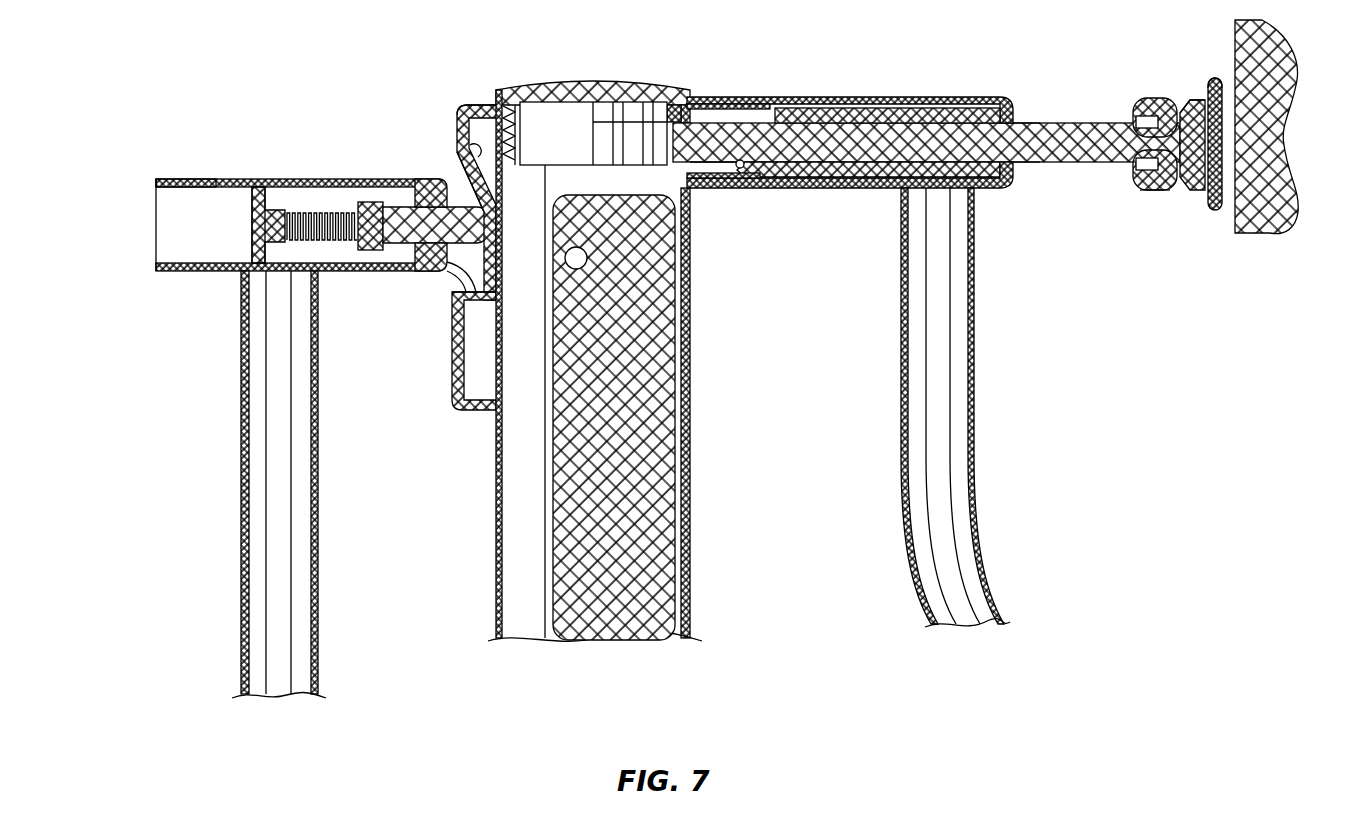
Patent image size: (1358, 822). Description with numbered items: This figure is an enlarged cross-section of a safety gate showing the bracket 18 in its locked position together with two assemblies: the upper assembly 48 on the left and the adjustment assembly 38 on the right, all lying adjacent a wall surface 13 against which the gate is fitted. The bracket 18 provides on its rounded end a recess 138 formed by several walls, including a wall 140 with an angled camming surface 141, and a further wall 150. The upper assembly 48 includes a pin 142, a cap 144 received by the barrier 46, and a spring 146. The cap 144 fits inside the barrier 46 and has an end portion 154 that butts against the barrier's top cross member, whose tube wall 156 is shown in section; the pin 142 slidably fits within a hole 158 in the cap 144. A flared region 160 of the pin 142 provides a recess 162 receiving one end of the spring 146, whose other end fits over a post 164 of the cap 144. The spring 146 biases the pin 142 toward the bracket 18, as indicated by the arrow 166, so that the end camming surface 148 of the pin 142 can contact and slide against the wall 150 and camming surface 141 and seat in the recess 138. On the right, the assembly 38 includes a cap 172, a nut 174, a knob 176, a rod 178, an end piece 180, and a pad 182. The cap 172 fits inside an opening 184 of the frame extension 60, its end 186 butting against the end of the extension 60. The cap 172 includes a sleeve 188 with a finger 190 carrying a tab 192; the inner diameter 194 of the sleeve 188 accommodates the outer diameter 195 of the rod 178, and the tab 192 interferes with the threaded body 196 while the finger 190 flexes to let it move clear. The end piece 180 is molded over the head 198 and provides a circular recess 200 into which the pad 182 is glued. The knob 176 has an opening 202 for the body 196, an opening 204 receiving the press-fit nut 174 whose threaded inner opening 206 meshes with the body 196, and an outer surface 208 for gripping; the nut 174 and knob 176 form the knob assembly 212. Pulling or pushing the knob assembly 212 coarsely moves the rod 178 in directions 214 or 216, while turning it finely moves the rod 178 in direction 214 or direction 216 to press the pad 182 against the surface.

The wall panel 13 is at (1233, 230).
The bracket 18 is at (485, 103).
The assembly 38 is at (1025, 52).
The barrier 46 is at (211, 177).
The upper assembly 48 is at (330, 78).
The extension 60 is at (735, 96).
The recess 138 is at (443, 173).
The wall 140 is at (460, 115).
The angled camming surface 141 is at (456, 172).
The pin 142 is at (455, 272).
The cap 144 is at (268, 211).
The spring 146 is at (292, 220).
The end camming surface 148 is at (455, 280).
The wall 150 is at (458, 290).
The end portion 154 is at (433, 272).
The tube wall 156 is at (163, 177).
The hole 158 is at (416, 201).
The flared region 160 is at (370, 250).
The recess 162 is at (350, 248).
The post 164 is at (262, 228).
The arrow 166 is at (102, 195).
The cap 172 is at (802, 108).
The nut 174 is at (1160, 108).
The knob 176 is at (1186, 106).
The rod 178 is at (1021, 123).
The end piece 180 is at (1209, 83).
The pad 182 is at (1223, 127).
The opening 184 is at (935, 100).
The end 186 is at (1008, 181).
The sleeve 188 is at (862, 170).
The finger 190 is at (780, 170).
The tab 192 is at (733, 163).
The inner diameter 194 is at (832, 158).
The outer diameter 195 is at (1045, 184).
The threaded body 196 is at (1026, 163).
The head 198 is at (1200, 188).
The circular recess 200 is at (1235, 80).
The opening 202 is at (1134, 122).
The opening 204 is at (1135, 168).
The threaded inner opening 206 is at (1135, 160).
The outer surface 208 is at (1150, 188).
The knob assembly 212 is at (1117, 62).
The direction 214 is at (1100, 358).
The direction 216 is at (1032, 403).